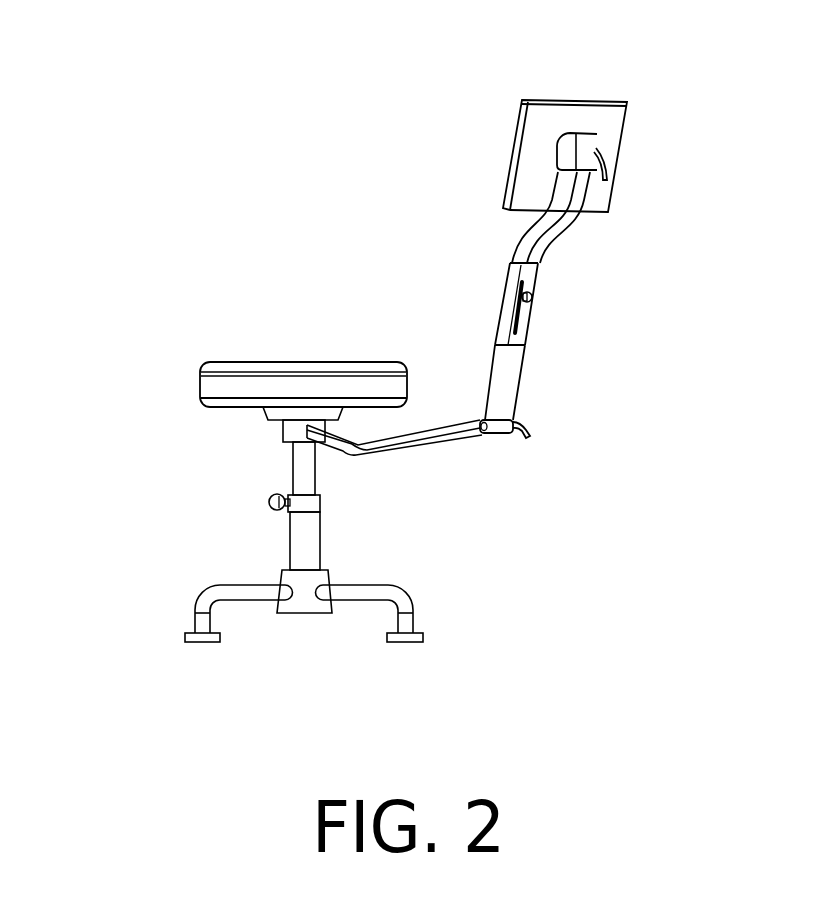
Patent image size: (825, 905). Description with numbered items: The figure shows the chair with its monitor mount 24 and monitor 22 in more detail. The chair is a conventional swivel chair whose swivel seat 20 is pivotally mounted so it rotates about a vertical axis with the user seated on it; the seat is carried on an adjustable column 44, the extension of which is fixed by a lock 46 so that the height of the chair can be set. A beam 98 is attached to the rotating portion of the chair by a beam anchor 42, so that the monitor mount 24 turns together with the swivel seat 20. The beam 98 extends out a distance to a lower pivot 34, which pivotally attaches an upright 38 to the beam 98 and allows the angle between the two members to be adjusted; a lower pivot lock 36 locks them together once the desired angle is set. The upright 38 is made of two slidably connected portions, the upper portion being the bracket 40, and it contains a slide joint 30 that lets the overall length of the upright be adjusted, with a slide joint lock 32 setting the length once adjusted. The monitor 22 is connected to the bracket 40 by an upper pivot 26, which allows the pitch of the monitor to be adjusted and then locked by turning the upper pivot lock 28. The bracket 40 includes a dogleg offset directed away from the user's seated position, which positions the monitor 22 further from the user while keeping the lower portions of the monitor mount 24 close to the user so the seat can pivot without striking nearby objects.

The swivel seat 20 is at (262, 362).
The monitor 22 is at (578, 118).
The monitor mount 24 is at (645, 402).
The upper pivot 26 is at (588, 152).
The upper pivot lock 28 is at (608, 172).
The slide joint 30 is at (528, 272).
The slide joint lock 32 is at (532, 295).
The lower pivot 34 is at (493, 438).
The lower pivot lock 36 is at (533, 438).
The upright 38 is at (508, 375).
The bracket 40 is at (573, 219).
The beam anchor 42 is at (295, 435).
The adjustable column 44 is at (305, 463).
The lock 46 is at (268, 503).
The beam 98 is at (395, 442).